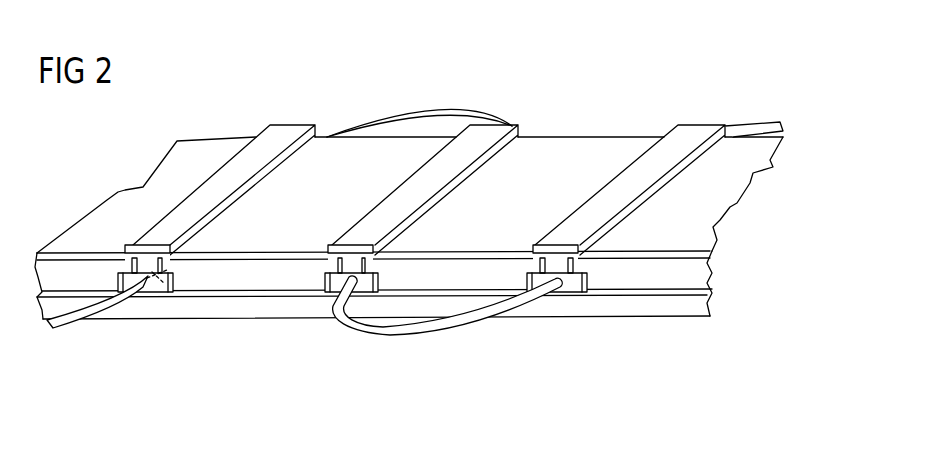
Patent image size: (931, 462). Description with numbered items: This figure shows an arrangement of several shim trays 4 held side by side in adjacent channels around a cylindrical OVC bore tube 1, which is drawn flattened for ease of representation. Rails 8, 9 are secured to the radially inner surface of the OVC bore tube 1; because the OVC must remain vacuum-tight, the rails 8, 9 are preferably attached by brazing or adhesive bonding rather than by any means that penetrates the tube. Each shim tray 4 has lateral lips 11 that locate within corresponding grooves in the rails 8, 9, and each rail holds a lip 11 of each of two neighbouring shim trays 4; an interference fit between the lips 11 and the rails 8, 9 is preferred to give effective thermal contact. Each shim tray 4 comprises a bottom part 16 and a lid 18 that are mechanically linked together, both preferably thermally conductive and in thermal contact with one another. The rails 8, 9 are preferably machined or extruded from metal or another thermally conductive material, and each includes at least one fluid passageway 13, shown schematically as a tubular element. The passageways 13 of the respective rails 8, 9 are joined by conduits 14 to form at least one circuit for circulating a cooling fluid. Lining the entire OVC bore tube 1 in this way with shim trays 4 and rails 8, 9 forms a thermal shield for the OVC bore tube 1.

The OVC bore tube 1 is at (678, 310).
The shim tray 4 is at (277, 290).
The rail 8 is at (282, 131).
The rail 9 is at (500, 127).
The lateral lip 11 is at (153, 258).
The fluid passageway 13 is at (163, 283).
The conduit 14 is at (406, 115).
The bottom part 16 is at (244, 263).
The lid 18 is at (614, 143).